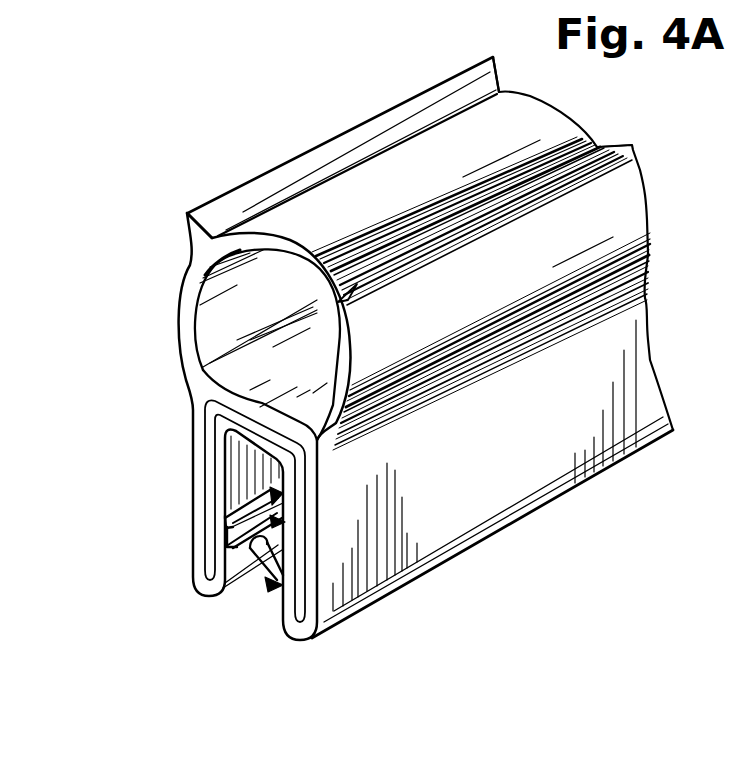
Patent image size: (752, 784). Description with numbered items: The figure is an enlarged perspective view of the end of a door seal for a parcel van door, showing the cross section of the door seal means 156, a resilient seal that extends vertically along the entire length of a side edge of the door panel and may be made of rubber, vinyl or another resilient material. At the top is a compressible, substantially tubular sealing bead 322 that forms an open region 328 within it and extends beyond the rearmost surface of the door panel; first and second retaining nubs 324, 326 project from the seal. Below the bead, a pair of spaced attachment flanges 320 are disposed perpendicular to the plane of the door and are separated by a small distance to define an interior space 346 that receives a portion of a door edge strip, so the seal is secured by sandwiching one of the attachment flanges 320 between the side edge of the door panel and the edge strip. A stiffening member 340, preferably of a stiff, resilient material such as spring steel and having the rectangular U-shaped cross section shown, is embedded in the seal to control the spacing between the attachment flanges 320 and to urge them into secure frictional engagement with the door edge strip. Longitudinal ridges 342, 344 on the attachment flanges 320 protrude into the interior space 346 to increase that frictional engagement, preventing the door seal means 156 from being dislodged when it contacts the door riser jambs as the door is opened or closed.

The door seal means 156 is at (173, 384).
The attachment flanges 320 is at (193, 505).
The tubular sealing bead 322 is at (178, 315).
The first retaining nub 324 is at (357, 300).
The second retaining nub 326 is at (188, 214).
The open region 328 is at (208, 330).
The stiffening member 340 is at (205, 578).
The longitudinal ridge 342 is at (232, 537).
The longitudinal ridge 344 is at (252, 547).
The interior space 346 is at (248, 478).